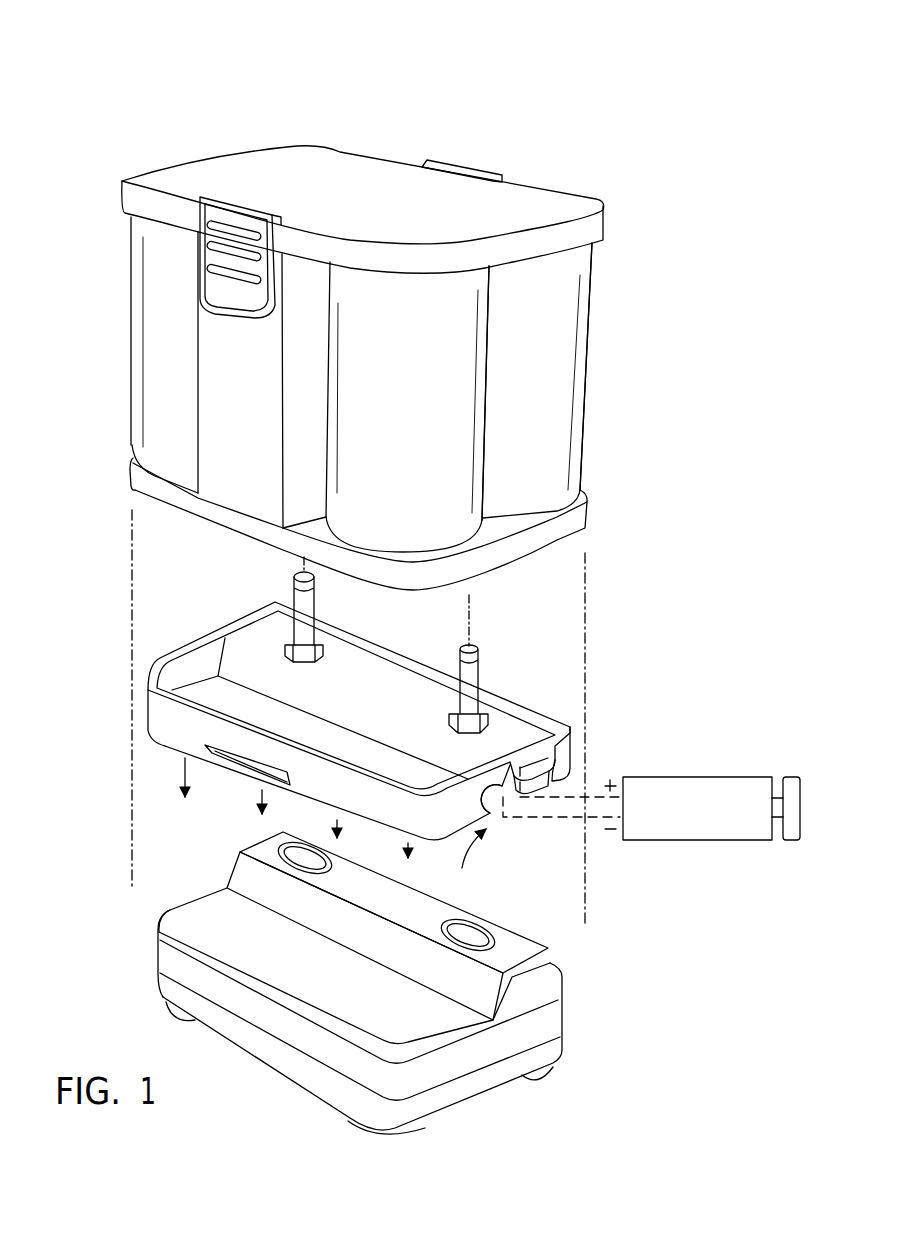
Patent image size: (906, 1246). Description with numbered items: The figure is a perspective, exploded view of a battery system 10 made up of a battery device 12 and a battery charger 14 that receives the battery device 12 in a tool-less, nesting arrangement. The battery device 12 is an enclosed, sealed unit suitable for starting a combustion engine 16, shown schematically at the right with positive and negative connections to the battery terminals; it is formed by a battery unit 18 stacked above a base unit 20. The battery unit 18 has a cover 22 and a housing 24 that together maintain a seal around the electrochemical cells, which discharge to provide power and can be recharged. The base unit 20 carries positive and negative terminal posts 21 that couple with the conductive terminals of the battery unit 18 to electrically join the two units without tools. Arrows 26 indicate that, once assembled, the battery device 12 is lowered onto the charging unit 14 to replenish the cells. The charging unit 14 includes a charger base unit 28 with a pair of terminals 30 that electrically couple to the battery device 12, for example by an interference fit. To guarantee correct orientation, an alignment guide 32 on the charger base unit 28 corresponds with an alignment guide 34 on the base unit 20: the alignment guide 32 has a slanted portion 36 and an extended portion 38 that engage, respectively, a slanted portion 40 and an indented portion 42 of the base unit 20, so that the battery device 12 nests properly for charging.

The battery system 10 is at (386, 70).
The battery device 12 is at (111, 437).
The battery charger 14 is at (360, 983).
The combustion engine 16 is at (697, 777).
The battery unit 18 is at (352, 384).
The base unit 20 is at (136, 713).
The positive and negative terminal posts 21 is at (452, 652).
The cover 22 is at (354, 163).
The housing 24 is at (565, 373).
The arrows 26 is at (260, 798).
The charger base unit 28 is at (504, 1043).
The terminals 30 is at (458, 935).
The alignment guide 32 is at (547, 984).
The alignment guide 34 is at (470, 863).
The slanted portion 36 is at (483, 983).
The extended portion 38 is at (518, 948).
The slanted portion 40 is at (497, 803).
The indented portion 42 is at (560, 763).